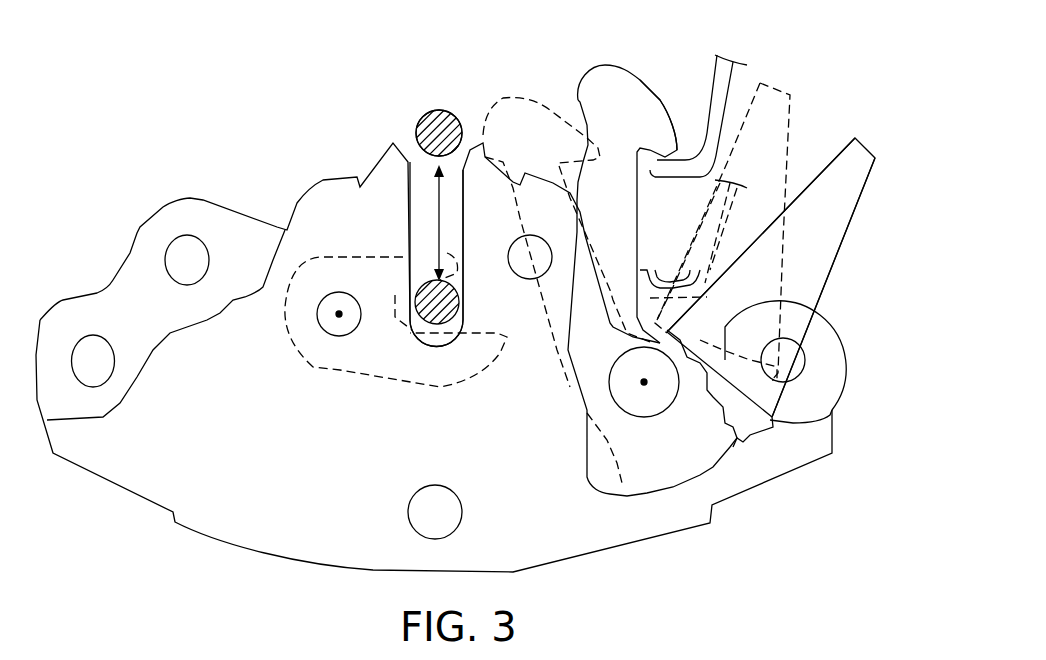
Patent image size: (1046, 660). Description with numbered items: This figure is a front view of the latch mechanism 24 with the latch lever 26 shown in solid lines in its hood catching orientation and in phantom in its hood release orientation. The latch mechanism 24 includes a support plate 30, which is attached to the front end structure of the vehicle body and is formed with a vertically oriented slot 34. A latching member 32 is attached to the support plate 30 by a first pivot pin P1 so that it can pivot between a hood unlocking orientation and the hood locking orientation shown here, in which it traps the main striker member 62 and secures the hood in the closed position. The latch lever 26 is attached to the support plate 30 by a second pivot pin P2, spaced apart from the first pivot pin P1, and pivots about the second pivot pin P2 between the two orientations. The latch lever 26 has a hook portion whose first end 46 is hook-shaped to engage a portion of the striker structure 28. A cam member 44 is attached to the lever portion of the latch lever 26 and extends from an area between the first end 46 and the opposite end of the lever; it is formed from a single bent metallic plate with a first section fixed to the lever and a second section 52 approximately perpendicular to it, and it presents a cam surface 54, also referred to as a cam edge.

The latch mechanism 24 is at (323, 170).
The latch lever 26 is at (635, 68).
The striker structure 28 is at (452, 107).
The support plate 30 is at (257, 478).
The latching member 32 is at (383, 347).
The slot 34 is at (413, 240).
The cam member 44 is at (858, 158).
The first end 46 is at (655, 120).
The second section 52 is at (863, 197).
The cam surface 54 is at (830, 163).
The main striker member 62 is at (424, 119).
The first pivot pin P1 is at (339, 314).
The second pivot pin P2 is at (644, 382).